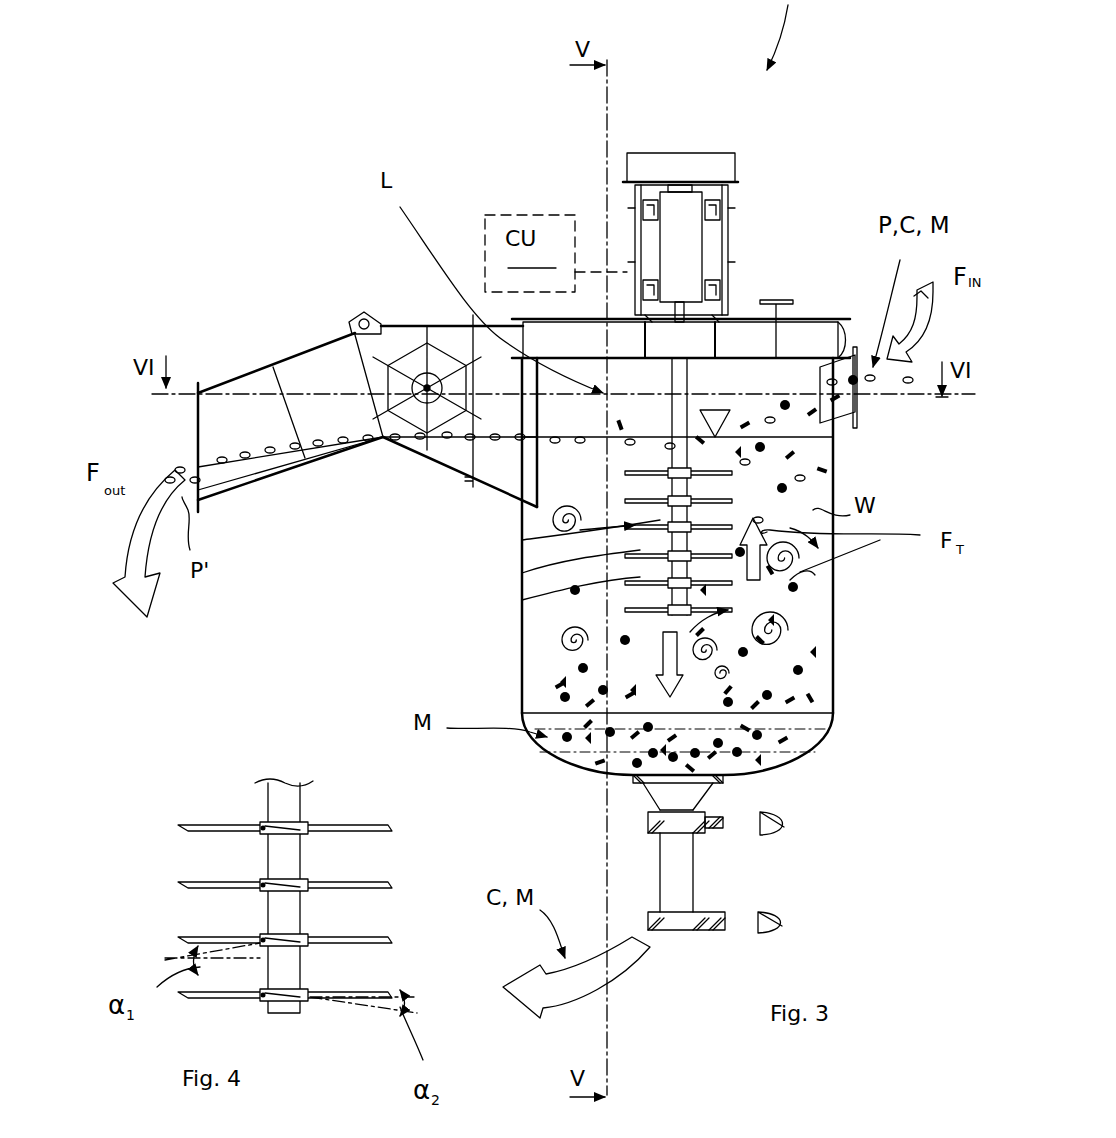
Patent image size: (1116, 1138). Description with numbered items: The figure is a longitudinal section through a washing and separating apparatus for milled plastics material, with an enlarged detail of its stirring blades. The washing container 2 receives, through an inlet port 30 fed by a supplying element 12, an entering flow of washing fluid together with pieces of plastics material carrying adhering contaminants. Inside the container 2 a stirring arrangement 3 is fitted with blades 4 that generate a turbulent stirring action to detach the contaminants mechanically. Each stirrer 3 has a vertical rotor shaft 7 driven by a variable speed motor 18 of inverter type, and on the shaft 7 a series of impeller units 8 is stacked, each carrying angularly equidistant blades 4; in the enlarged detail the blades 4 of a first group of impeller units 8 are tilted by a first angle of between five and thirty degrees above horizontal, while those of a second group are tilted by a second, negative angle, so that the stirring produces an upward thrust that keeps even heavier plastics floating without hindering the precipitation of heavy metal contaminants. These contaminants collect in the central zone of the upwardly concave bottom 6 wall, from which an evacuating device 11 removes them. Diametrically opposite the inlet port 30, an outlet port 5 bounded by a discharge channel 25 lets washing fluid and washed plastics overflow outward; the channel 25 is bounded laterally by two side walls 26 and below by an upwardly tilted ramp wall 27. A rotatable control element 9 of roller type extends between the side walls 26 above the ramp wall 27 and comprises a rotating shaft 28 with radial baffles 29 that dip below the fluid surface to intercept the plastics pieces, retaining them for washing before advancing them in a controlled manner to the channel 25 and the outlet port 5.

In FIG. 3, the washing container 2 is at (835, 570).
In FIG. 3, the stirring arrangement 3 is at (660, 556).
In FIG. 3, the blades 4 is at (628, 580).
In FIG. 4, the blades 4 is at (347, 828).
In FIG. 3, the outlet port 5 is at (178, 425).
In FIG. 3, the bottom wall 6 is at (793, 762).
In FIG. 3, the rotor shaft 7 is at (672, 546).
In FIG. 4, the rotor shaft 7 is at (285, 800).
In FIG. 4, the impeller units 8 is at (167, 827).
In FIG. 3, the rotatable control element 9 is at (423, 328).
In FIG. 3, the evacuating device 11 is at (690, 958).
In FIG. 3, the supplying element 12 is at (848, 277).
In FIG. 3, the variable speed motor 18 is at (682, 253).
In FIG. 3, the discharge channel 25 is at (281, 316).
In FIG. 3, the side walls 26 is at (455, 337).
In FIG. 3, the ramp wall 27 is at (427, 390).
In FIG. 3, the rotating shaft 28 is at (383, 437).
In FIG. 3, the baffles 29 is at (383, 325).
In FIG. 3, the inlet port 30 is at (870, 415).